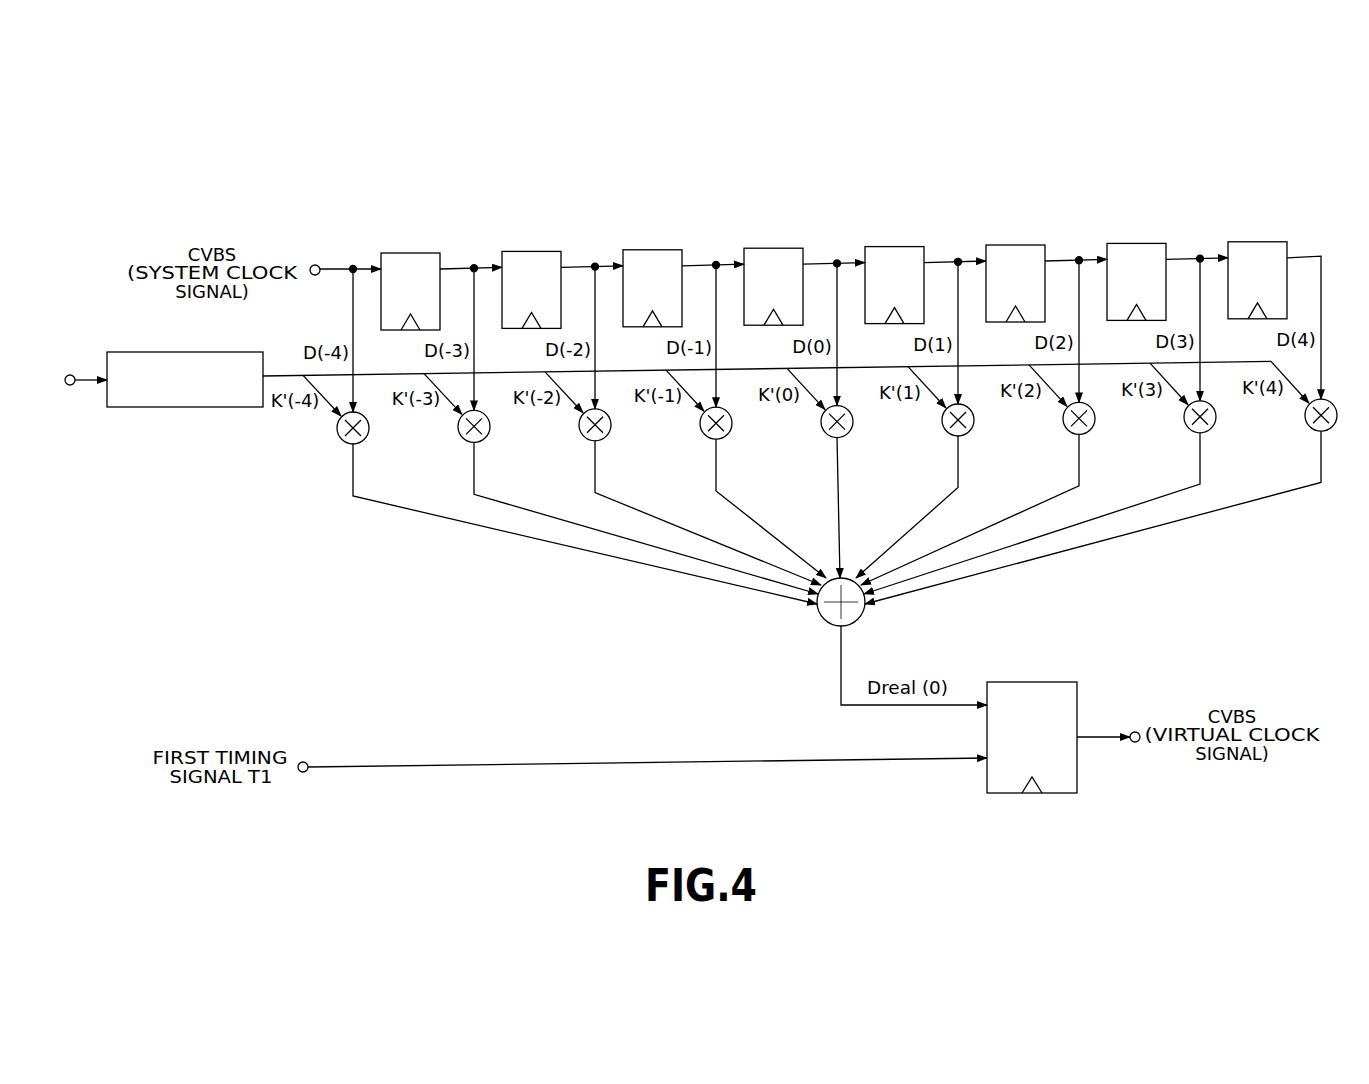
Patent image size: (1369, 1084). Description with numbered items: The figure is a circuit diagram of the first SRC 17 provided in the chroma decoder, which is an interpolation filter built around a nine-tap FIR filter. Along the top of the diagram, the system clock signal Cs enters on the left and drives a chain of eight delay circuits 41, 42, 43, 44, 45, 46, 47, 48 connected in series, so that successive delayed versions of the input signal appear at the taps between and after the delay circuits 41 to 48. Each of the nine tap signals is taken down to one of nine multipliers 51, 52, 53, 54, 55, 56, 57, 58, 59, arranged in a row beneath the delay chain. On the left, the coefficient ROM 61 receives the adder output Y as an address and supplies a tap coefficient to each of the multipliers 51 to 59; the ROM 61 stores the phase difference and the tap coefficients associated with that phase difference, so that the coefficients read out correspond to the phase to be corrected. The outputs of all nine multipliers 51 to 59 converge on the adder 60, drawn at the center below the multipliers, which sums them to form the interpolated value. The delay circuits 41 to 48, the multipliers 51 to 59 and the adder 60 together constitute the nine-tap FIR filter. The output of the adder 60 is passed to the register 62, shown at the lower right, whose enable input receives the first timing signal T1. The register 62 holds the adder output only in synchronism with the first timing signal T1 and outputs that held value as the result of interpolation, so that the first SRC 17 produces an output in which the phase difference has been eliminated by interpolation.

The first SRC 17 is at (823, 183).
The delay circuit 41 is at (409, 253).
The delay circuit 42 is at (530, 251).
The delay circuit 43 is at (651, 250).
The delay circuit 44 is at (772, 248).
The delay circuit 45 is at (893, 246).
The delay circuit 46 is at (1014, 245).
The delay circuit 47 is at (1135, 243).
The delay circuit 48 is at (1256, 241).
The multiplier 51 is at (341, 438).
The multiplier 52 is at (462, 436).
The multiplier 53 is at (583, 435).
The multiplier 54 is at (704, 433).
The multiplier 55 is at (825, 432).
The multiplier 56 is at (946, 430).
The multiplier 57 is at (1067, 428).
The multiplier 58 is at (1188, 427).
The multiplier 59 is at (1309, 425).
The adder 60 is at (825, 622).
The coefficient ROM 61 is at (185, 408).
The register 62 is at (1030, 682).